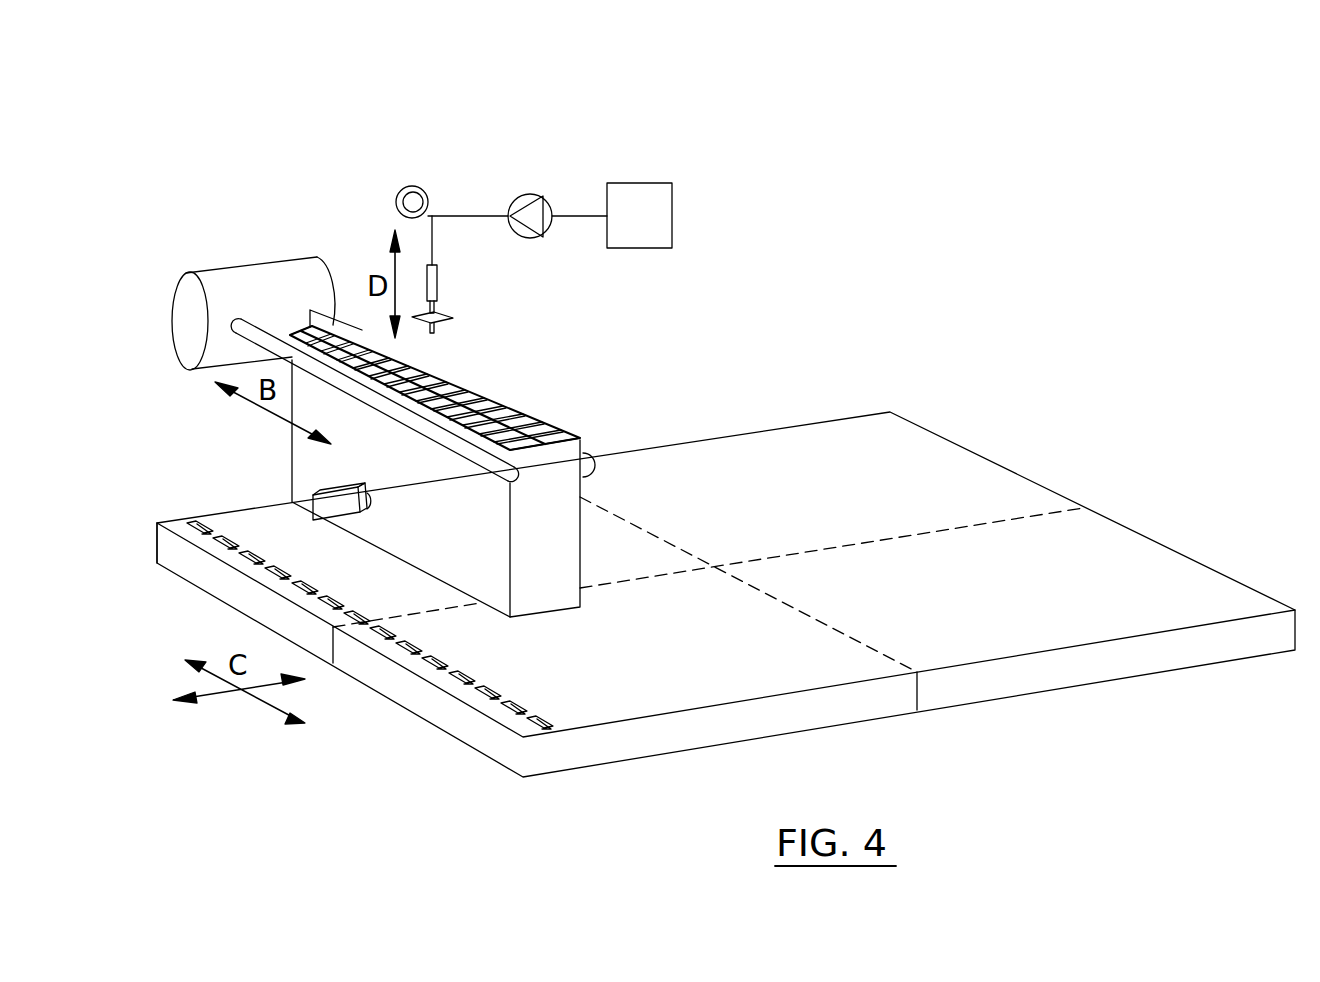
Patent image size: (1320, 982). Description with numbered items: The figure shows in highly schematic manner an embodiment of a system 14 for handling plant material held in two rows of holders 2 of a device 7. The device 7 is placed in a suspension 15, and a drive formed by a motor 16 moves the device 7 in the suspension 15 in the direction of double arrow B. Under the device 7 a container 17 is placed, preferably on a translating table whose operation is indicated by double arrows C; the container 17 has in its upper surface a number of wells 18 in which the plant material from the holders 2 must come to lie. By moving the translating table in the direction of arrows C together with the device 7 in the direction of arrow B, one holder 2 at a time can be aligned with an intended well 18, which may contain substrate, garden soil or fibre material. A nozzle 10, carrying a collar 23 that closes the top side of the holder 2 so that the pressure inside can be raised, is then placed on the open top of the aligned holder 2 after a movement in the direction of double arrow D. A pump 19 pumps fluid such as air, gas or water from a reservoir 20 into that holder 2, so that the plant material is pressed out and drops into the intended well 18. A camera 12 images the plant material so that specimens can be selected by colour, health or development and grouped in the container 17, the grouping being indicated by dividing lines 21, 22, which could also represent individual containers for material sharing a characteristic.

The holders 2 is at (517, 437).
The device 7 is at (585, 548).
The nozzle 10 is at (437, 282).
The camera 12 is at (330, 493).
The system 14 is at (1050, 355).
The suspension 15 is at (450, 418).
The motor 16 is at (245, 270).
The container 17 is at (612, 745).
The wells 18 is at (498, 690).
The pump 19 is at (528, 197).
The reservoir 20 is at (660, 203).
The dividing line 21 is at (830, 622).
The dividing line 22 is at (895, 537).
The collar 23 is at (453, 318).